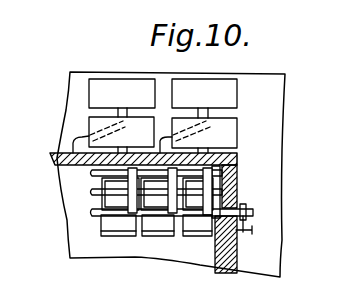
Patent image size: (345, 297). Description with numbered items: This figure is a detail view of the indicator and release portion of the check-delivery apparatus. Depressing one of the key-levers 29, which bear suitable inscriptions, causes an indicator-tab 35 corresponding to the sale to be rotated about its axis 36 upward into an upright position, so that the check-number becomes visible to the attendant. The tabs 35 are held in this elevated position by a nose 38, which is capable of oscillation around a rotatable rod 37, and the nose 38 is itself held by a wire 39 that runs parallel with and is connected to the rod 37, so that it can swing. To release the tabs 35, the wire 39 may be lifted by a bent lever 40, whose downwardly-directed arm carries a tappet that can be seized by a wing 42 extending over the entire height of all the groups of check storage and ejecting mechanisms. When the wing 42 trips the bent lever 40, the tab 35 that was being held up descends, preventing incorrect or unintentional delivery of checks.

The key-levers 29 is at (155, 116).
The indicator-tab 35 is at (156, 225).
The axis 36 is at (90, 191).
The rotatable rod 37 is at (90, 172).
The nose 38 is at (157, 191).
The wire 39 is at (253, 213).
The bent lever 40 is at (252, 230).
The wing 42 is at (237, 256).